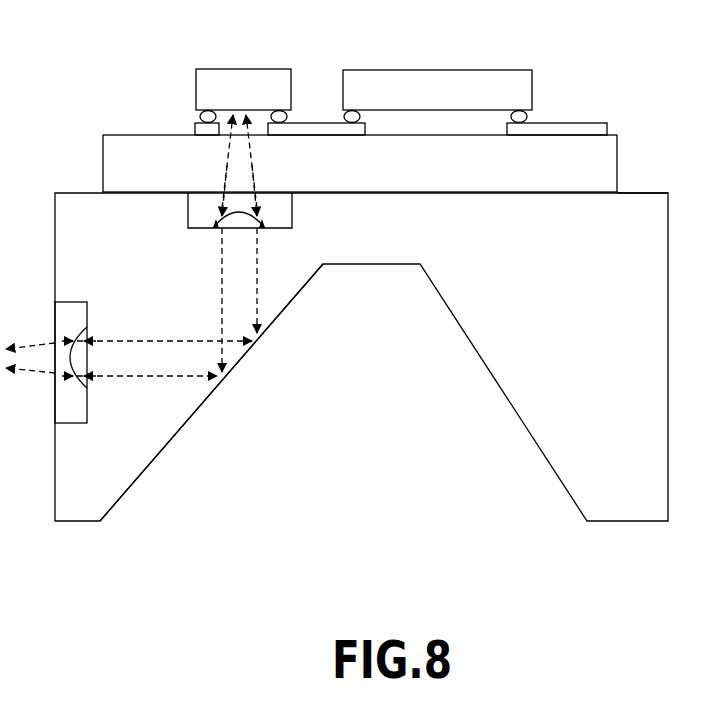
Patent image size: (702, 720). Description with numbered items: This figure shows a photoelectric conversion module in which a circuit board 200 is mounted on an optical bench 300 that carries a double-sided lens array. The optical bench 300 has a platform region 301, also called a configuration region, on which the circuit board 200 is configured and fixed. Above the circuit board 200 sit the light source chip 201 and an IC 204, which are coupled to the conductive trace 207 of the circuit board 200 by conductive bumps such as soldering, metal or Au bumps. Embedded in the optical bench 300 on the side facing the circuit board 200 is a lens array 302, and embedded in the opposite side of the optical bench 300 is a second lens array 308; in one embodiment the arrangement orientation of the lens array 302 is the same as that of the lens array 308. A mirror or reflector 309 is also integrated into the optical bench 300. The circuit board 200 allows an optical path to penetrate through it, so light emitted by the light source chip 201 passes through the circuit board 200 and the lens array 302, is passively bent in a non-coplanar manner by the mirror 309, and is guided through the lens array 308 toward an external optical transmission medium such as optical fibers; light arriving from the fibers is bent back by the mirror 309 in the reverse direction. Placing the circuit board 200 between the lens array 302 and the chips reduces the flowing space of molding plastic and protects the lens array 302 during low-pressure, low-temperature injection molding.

The circuit board 200 is at (360, 163).
The light source chip 201 is at (243, 96).
The IC 204 is at (437, 96).
The conductive trace 207 is at (325, 121).
The optical bench 300 is at (361, 357).
The platform region 301 is at (648, 190).
The lens array 302 is at (240, 243).
The lens array 308 is at (58, 377).
The mirror 309 is at (195, 392).